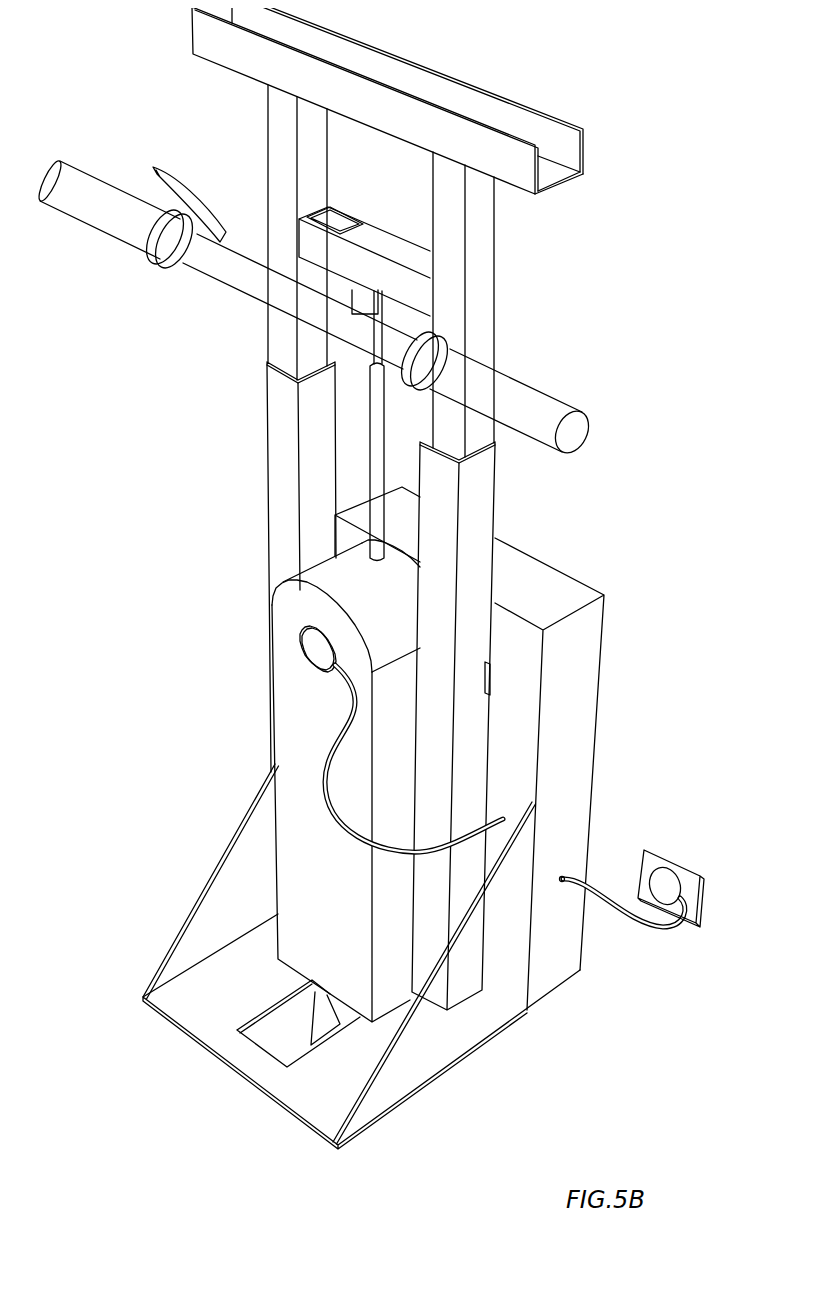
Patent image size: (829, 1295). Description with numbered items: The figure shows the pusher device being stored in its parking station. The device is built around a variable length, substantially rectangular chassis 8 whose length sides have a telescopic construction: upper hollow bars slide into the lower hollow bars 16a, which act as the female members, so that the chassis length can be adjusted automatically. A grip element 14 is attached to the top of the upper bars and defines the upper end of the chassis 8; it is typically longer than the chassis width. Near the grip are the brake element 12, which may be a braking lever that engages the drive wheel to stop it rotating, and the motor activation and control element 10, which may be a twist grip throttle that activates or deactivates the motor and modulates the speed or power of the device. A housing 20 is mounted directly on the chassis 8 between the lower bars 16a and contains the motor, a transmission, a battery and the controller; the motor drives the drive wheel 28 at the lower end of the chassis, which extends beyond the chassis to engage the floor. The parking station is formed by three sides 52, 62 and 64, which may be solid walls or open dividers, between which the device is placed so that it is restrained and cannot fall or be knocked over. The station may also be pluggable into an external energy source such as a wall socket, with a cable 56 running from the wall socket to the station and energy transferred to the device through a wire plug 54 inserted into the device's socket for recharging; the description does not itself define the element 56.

The chassis 8 is at (252, 540).
The motor activation and control element 10 is at (515, 372).
The brake element 12 is at (171, 176).
The grip element 14 is at (455, 67).
The lower hollow bars 16a is at (276, 481).
The housing 20 is at (287, 743).
The drive wheel 28 is at (313, 1027).
The side of parking station 52 is at (545, 580).
The wire plug 54 is at (347, 710).
The power cable 56 is at (627, 917).
The side of parking station 62 is at (475, 1027).
The side of parking station 64 is at (225, 887).